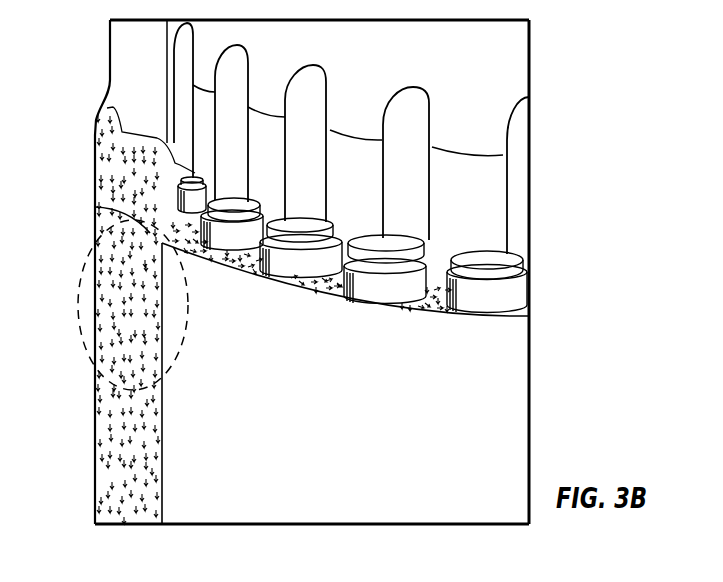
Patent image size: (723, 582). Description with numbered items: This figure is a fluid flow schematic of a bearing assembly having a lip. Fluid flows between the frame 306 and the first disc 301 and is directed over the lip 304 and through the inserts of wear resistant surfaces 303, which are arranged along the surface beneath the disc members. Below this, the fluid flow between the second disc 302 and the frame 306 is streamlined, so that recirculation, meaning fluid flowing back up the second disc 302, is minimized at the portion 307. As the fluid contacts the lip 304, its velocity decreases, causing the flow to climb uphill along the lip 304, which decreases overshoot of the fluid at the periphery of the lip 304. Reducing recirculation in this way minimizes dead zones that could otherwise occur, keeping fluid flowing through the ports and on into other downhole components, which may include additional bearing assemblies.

The first disc 301 is at (521, 207).
The second disc 302 is at (517, 427).
The inserts of wear resistant surfaces 303 is at (518, 258).
The lip 304 is at (95, 206).
The frame 306 is at (95, 458).
The portion 307 is at (80, 290).